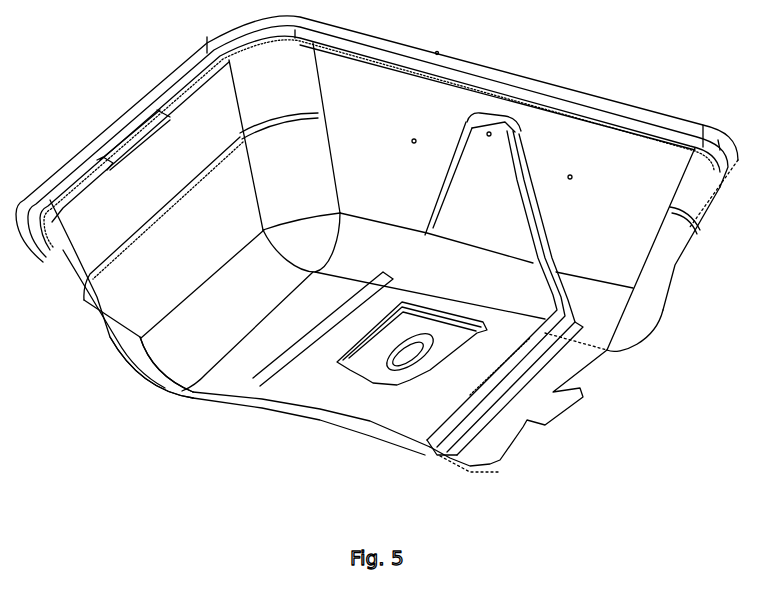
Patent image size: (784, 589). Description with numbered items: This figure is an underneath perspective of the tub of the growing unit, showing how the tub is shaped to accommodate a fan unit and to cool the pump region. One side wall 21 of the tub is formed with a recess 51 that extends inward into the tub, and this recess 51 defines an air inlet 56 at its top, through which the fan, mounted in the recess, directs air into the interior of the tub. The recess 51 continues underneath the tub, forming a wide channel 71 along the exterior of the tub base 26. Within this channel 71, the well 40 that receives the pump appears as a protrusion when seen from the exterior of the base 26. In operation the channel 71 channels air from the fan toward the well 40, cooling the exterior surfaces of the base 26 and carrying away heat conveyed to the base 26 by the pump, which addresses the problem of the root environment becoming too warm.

The side wall 21 is at (619, 228).
The tub base 26 is at (220, 372).
The well 40 is at (428, 370).
The recess 51 is at (497, 233).
The air inlet 56 is at (493, 145).
The channel 71 is at (334, 396).